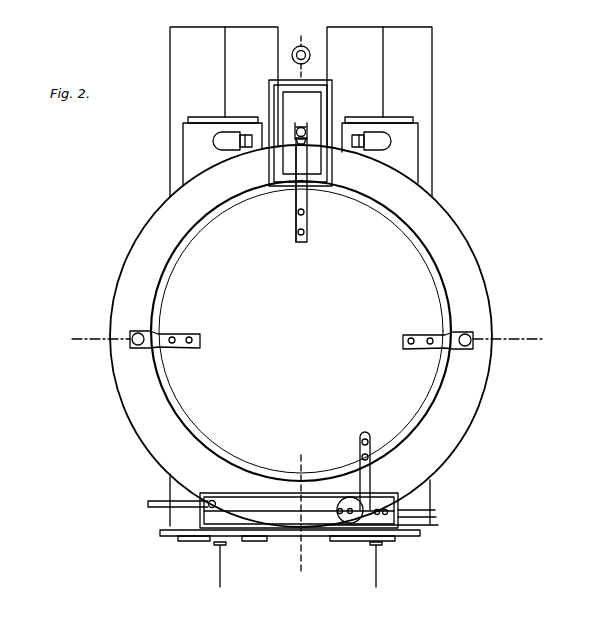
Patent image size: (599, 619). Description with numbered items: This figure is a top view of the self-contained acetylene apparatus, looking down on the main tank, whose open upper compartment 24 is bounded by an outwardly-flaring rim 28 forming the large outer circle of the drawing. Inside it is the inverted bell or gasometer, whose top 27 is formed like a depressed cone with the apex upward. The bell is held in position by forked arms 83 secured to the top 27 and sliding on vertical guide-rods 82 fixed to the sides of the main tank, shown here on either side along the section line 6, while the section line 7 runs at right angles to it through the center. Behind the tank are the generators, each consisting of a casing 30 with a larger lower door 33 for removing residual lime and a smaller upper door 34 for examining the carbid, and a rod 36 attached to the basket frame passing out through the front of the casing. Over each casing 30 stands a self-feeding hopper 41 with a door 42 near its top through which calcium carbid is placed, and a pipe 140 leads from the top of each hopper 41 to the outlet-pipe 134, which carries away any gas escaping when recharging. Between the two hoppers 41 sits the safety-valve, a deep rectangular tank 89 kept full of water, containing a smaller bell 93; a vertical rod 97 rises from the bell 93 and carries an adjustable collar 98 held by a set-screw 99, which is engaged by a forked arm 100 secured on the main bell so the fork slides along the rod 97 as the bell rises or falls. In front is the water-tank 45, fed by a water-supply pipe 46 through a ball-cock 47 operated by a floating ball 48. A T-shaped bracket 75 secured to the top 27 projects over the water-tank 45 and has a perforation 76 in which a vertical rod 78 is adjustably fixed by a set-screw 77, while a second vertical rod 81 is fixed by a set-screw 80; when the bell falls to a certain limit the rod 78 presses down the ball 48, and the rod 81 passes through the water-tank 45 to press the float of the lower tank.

The section line 6 is at (305, 339).
The section line 7 is at (297, 305).
The upper compartment 24 is at (438, 288).
The top of the bell 27 is at (312, 317).
The outwardly-flaring rim 28 is at (456, 238).
The casing 30 is at (139, 527).
The lower door 33 is at (180, 540).
The upper door 34 is at (205, 537).
The rod 36 is at (222, 568).
The hopper 41 is at (196, 130).
The hopper door 42 is at (238, 118).
The water-tank 45 is at (255, 502).
The water-supply pipe 46 is at (152, 503).
The ball-cock 47 is at (211, 500).
The floating ball 48 is at (345, 498).
The T-shaped bracket 75 is at (368, 432).
The perforation 76 is at (378, 514).
The set-screw 77 is at (340, 518).
The vertical rod 78 is at (379, 509).
The set-screw 80 is at (422, 504).
The vertical rod 81 is at (436, 516).
The guide-rods 82 is at (133, 346).
The forked arms 83 is at (186, 334).
The safety tank 89 is at (333, 177).
The safety bell 93 is at (283, 166).
The vertical rod 97 is at (307, 130).
The adjustable collar 98 is at (300, 127).
The set-screw 99 is at (297, 148).
The forked arm 100 is at (314, 203).
The outlet-pipe 134 is at (311, 54).
The pipe 140 is at (235, 142).